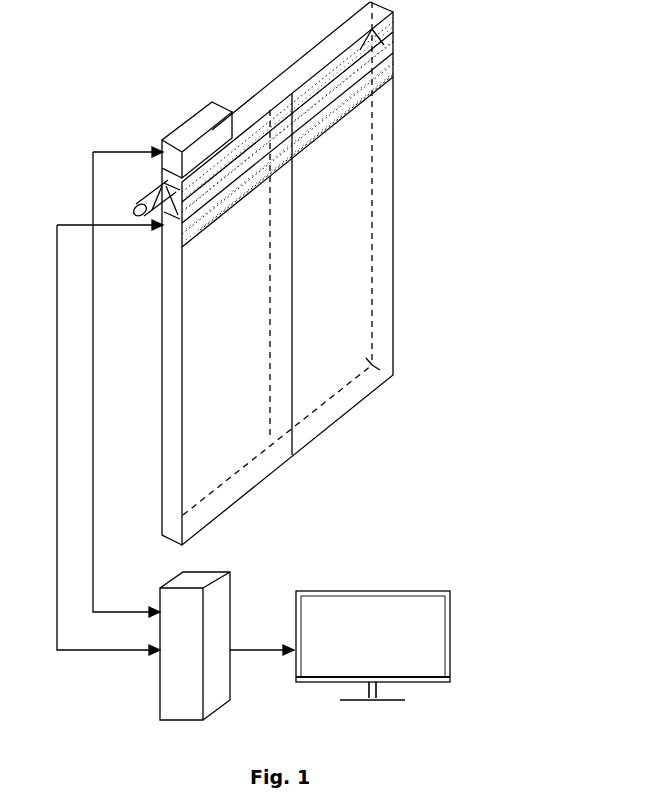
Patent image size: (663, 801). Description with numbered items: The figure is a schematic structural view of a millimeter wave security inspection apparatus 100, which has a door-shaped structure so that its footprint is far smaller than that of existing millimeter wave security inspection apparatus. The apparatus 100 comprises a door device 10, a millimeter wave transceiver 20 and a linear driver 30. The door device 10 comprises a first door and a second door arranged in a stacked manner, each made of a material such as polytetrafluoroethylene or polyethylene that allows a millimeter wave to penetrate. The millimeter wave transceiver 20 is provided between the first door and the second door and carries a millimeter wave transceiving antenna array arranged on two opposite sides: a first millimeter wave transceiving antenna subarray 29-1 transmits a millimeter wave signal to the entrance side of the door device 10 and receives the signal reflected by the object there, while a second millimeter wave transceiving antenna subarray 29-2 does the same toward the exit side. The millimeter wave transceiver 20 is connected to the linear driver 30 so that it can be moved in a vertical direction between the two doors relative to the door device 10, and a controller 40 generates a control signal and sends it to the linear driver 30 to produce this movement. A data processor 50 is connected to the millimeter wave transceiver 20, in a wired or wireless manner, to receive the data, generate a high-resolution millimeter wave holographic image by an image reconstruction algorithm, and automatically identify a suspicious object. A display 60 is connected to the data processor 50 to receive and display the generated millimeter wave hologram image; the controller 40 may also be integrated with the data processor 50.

The millimeter wave security inspection apparatus 100 is at (154, 34).
The door device 10 is at (383, 153).
The millimeter wave transceiver 20 is at (372, 78).
The first millimeter wave transceiving antenna subarray 29-1 is at (333, 108).
The second millimeter wave transceiving antenna subarray 29-2 is at (322, 90).
The linear driver 30 is at (132, 208).
The controller 40 is at (190, 127).
The data processor 50 is at (155, 687).
The display 60 is at (460, 636).